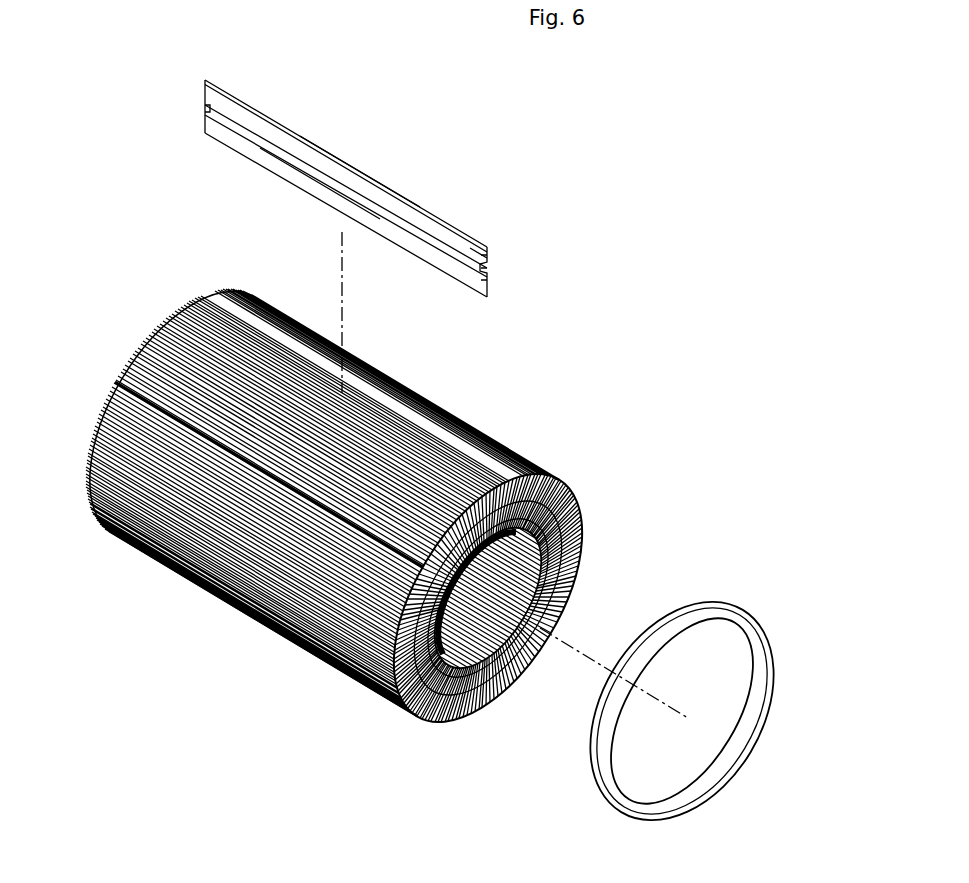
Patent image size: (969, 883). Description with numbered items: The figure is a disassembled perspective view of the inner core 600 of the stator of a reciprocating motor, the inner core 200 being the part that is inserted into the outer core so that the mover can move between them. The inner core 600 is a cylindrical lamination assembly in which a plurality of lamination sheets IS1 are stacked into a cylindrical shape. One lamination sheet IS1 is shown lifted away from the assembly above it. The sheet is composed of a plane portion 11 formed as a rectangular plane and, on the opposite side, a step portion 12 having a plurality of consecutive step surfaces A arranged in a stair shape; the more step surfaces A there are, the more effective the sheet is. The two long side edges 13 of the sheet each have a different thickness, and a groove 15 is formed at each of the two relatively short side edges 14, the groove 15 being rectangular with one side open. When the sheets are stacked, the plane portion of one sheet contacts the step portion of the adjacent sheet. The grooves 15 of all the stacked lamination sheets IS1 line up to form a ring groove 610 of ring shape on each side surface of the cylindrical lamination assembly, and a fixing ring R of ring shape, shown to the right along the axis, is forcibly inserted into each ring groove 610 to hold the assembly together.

The plane portion 11 is at (463, 226).
The step portion 12 is at (548, 256).
The long side edges 13 is at (311, 142).
The short side edges 14 is at (206, 80).
The groove 15 is at (205, 107).
The step surfaces A is at (488, 258).
The lamination sheet IS1 is at (412, 172).
The inner core 200 is at (538, 436).
The inner core 600 is at (315, 683).
The ring groove 610 is at (466, 722).
The fixing ring R is at (763, 606).